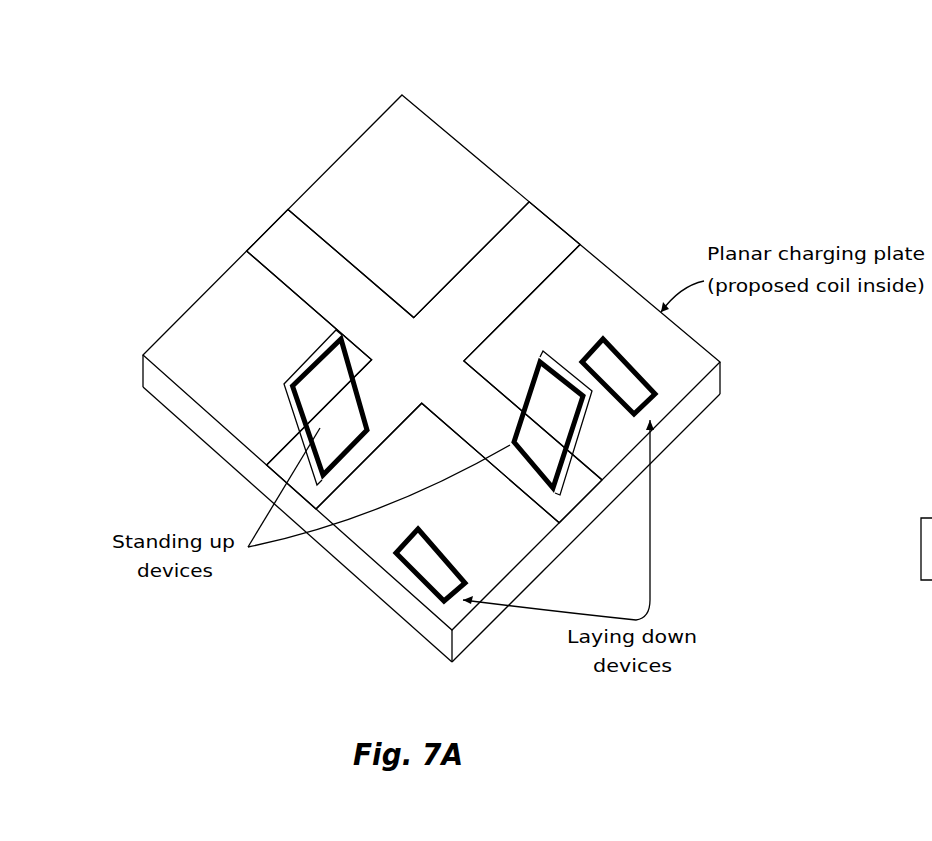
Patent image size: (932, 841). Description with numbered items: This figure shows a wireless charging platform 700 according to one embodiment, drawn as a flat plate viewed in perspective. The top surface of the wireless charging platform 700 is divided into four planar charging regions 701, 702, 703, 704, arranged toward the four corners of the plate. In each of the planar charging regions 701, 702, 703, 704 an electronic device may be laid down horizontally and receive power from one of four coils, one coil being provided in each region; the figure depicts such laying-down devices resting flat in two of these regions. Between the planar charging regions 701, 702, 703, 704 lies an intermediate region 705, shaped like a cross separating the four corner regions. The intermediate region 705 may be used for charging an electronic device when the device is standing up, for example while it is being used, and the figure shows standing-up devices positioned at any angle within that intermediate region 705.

The wireless charging platform 700 is at (368, 128).
The planar charging region 701 is at (434, 260).
The planar charging region 702 is at (270, 404).
The planar charging region 703 is at (505, 556).
The planar charging region 704 is at (687, 368).
The intermediate region 705 is at (350, 296).